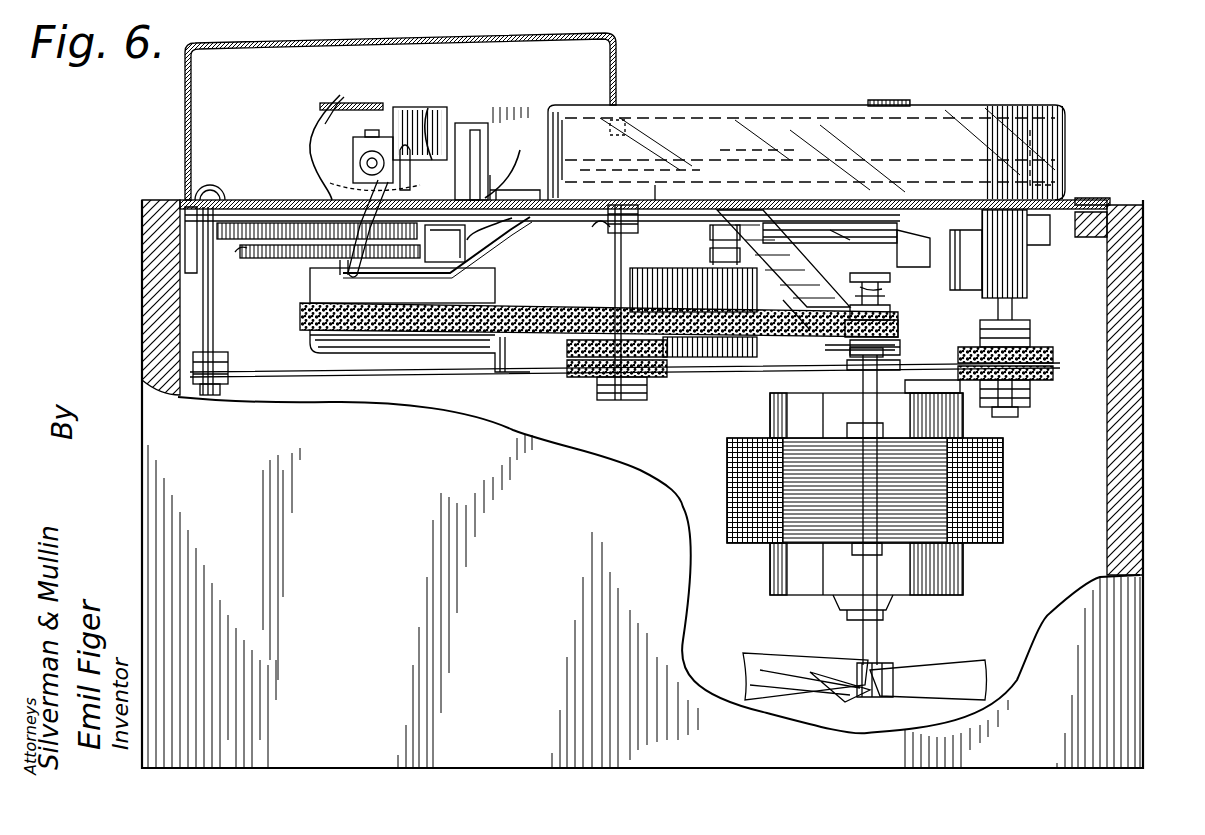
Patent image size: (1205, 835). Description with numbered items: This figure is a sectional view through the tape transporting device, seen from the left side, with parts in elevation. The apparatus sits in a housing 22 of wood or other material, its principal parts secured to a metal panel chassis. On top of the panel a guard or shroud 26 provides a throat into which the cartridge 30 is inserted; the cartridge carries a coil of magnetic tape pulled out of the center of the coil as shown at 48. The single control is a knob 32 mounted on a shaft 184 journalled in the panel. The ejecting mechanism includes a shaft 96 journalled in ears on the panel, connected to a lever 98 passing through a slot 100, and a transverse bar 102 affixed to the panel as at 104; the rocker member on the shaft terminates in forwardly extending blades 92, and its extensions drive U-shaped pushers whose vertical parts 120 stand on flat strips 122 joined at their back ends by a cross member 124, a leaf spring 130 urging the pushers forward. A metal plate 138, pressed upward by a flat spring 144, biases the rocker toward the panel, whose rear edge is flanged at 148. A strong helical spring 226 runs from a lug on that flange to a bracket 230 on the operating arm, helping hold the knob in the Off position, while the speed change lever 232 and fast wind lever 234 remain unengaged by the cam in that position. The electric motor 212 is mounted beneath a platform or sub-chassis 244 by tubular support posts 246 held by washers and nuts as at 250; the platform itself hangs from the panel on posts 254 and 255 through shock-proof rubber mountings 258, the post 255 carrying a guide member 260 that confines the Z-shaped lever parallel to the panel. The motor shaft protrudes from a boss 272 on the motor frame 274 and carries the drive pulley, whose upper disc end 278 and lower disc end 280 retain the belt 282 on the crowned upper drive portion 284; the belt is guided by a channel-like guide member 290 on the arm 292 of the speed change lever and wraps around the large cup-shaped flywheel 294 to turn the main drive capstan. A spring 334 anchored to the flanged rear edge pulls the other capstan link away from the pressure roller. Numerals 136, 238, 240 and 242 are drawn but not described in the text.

The housing 22 is at (1143, 383).
The guard or shroud 26 is at (522, 35).
The cartridge 30 is at (1040, 88).
The knob 32 is at (958, 112).
The tape pulled from coil center 48 is at (764, 167).
The blades 92 is at (622, 138).
The shaft 96 is at (360, 158).
The lever 98 is at (295, 258).
The slot 100 is at (332, 200).
The bar 102 is at (420, 187).
The bar fixing point 104 is at (445, 173).
The vertical parts of pushers 120 is at (492, 185).
The flat strips 122 is at (522, 148).
The cross member 124 is at (400, 150).
The leaf spring 130 is at (325, 118).
The lever end 136 is at (355, 95).
The metal plate 138 is at (517, 222).
The flat spring 144 is at (470, 238).
The flanged rear edge 148 is at (185, 225).
The shaft 184 is at (972, 276).
The electric motor 212 is at (735, 502).
The helical spring 226 is at (335, 270).
The bracket 230 is at (410, 275).
The speed change lever 232 is at (830, 230).
The fast wind lever 234 is at (812, 253).
The resilient block 238 is at (485, 333).
The gear 240 is at (625, 275).
The bolt 242 is at (590, 228).
The platform or sub-chassis 244 is at (705, 365).
The support posts 246 is at (860, 408).
The washers and nuts 250 is at (900, 320).
The post 254 is at (1012, 308).
The post 255 is at (565, 350).
The shock-proof rubber mountings 258 is at (592, 398).
The guide member 260 is at (658, 210).
The boss 272 is at (885, 368).
The motor frame 274 is at (907, 413).
The upper disc end 278 is at (878, 290).
The lower disc end 280 is at (897, 350).
The belt 282 is at (830, 340).
The upper drive portion 284 is at (875, 297).
The channel-like guide member 290 is at (803, 287).
The arm 292 is at (488, 345).
The flywheel 294 is at (360, 367).
The spring 334 is at (240, 222).